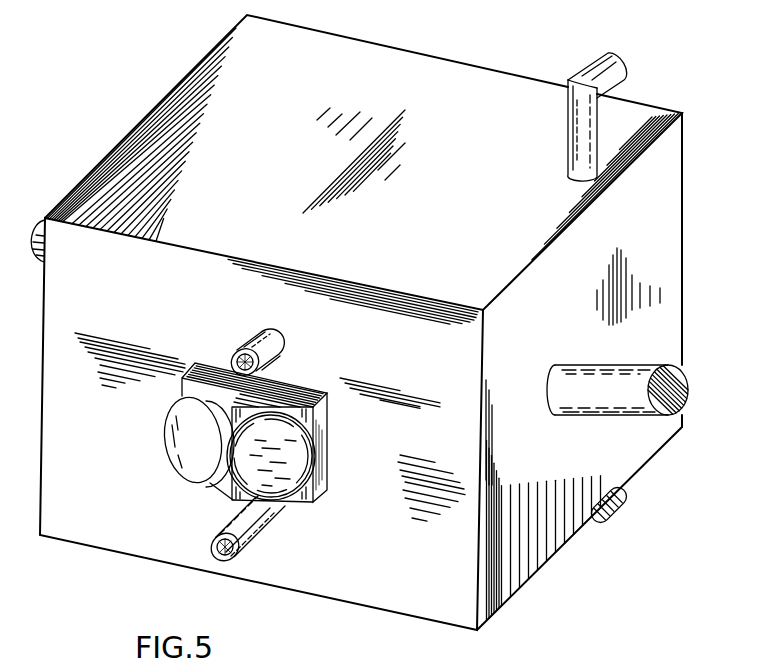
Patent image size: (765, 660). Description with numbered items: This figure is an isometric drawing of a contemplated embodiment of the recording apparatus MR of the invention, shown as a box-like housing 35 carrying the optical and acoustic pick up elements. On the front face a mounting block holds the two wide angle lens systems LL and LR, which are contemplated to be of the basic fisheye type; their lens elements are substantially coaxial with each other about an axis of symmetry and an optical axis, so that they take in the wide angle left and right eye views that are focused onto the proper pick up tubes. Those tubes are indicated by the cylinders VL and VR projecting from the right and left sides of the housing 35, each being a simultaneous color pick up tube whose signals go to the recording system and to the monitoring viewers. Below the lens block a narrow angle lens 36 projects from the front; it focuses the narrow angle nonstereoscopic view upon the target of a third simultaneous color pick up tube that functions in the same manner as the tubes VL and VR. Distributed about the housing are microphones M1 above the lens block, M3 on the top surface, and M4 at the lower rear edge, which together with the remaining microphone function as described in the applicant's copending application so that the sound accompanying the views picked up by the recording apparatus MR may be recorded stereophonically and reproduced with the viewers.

The recording apparatus MR is at (148, 44).
The housing 35 is at (685, 136).
The microphone M3 is at (595, 62).
The pick up tube VR is at (38, 226).
The pick up tube VL is at (682, 386).
The microphone M4 is at (620, 495).
The microphone M1 is at (243, 348).
The lens system LR is at (168, 420).
The lens system LL is at (272, 500).
The narrow angle lens 36 is at (221, 530).